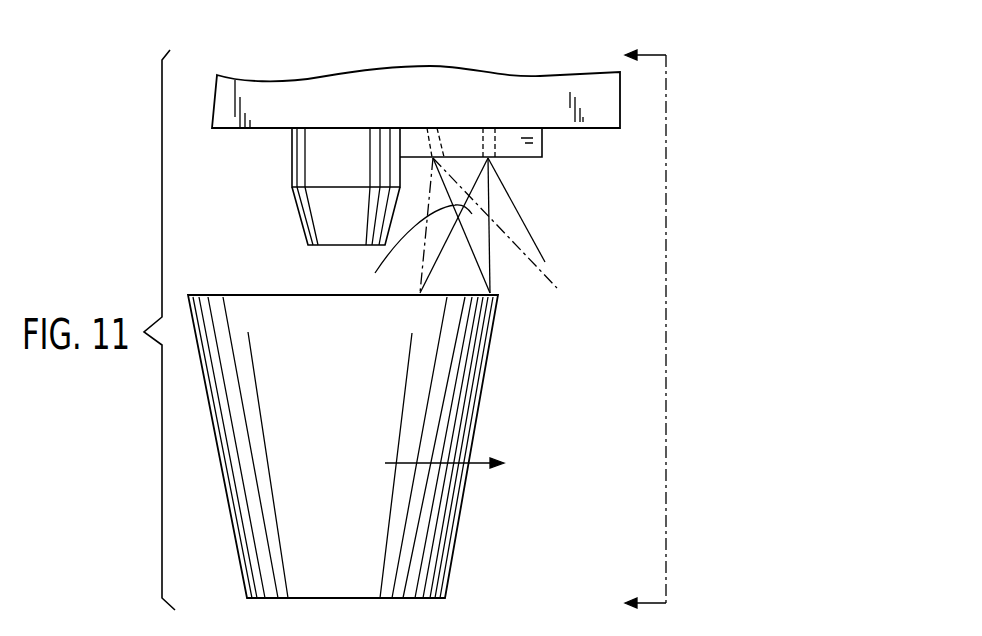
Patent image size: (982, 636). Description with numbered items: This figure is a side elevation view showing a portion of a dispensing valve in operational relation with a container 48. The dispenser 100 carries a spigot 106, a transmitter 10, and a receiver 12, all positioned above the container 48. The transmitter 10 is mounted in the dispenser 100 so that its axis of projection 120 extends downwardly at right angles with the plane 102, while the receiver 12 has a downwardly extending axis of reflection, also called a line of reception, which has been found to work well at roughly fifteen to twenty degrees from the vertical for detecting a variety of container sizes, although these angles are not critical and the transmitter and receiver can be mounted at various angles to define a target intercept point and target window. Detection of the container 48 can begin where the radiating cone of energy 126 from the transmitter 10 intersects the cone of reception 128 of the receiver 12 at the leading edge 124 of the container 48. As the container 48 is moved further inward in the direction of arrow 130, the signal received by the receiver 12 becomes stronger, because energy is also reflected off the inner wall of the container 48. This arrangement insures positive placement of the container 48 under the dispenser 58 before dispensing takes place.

The dispenser 100 is at (358, 78).
The receiver 12 is at (425, 128).
The transmitter 10 is at (490, 128).
The spigot 106 is at (318, 153).
The dispenser 58 is at (278, 218).
The plane 102 is at (528, 157).
The axis of projection 120 is at (490, 190).
The radiating cone of energy 126 is at (510, 207).
The cone of reception 128 is at (527, 246).
The leading edge 124 is at (492, 293).
The container 48 is at (333, 417).
The arrow 130 is at (480, 465).